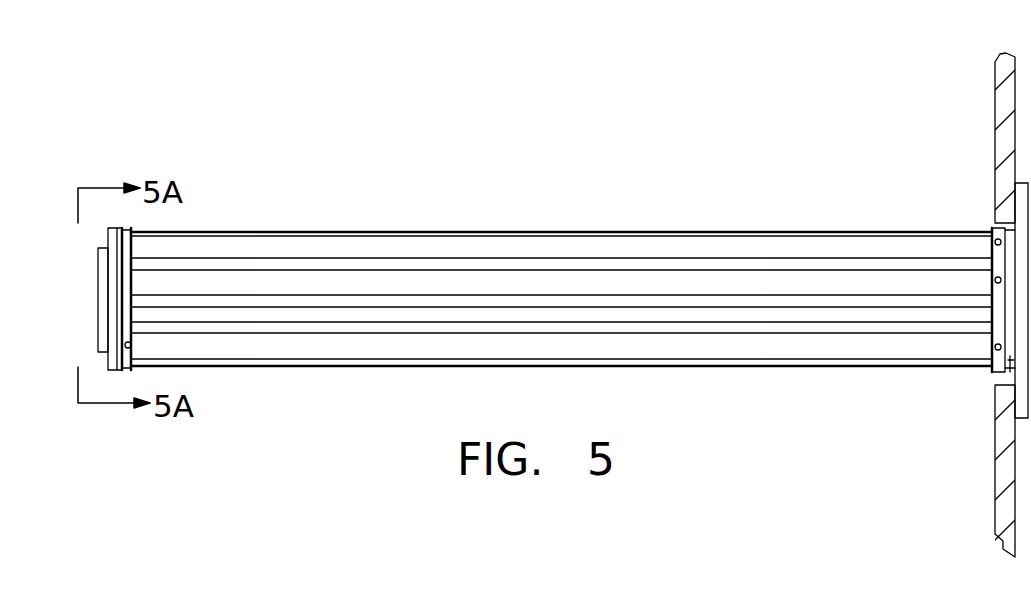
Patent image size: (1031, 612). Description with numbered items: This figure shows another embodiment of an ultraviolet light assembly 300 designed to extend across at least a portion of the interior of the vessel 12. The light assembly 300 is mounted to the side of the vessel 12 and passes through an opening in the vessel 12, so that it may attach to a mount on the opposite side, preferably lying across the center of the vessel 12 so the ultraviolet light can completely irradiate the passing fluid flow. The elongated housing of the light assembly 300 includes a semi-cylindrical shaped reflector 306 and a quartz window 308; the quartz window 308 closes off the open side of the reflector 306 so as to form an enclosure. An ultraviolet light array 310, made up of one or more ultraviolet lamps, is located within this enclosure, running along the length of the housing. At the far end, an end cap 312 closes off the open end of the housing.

The vessel 12 is at (993, 102).
The light assembly 300 is at (625, 186).
The reflector 306 is at (285, 232).
The quartz window 308 is at (347, 367).
The ultraviolet light array 310 is at (555, 327).
The end cap 312 is at (102, 315).